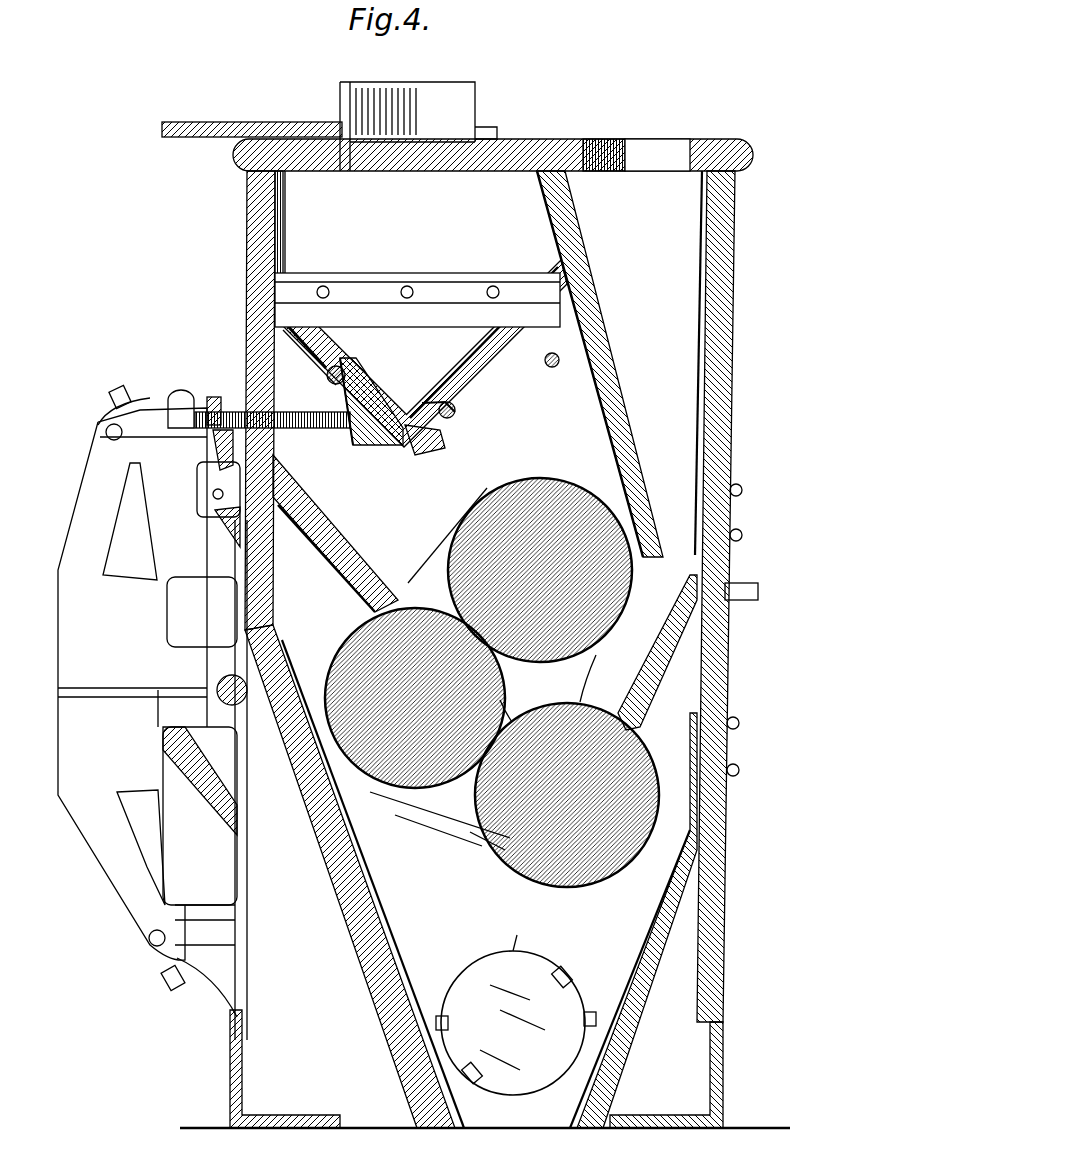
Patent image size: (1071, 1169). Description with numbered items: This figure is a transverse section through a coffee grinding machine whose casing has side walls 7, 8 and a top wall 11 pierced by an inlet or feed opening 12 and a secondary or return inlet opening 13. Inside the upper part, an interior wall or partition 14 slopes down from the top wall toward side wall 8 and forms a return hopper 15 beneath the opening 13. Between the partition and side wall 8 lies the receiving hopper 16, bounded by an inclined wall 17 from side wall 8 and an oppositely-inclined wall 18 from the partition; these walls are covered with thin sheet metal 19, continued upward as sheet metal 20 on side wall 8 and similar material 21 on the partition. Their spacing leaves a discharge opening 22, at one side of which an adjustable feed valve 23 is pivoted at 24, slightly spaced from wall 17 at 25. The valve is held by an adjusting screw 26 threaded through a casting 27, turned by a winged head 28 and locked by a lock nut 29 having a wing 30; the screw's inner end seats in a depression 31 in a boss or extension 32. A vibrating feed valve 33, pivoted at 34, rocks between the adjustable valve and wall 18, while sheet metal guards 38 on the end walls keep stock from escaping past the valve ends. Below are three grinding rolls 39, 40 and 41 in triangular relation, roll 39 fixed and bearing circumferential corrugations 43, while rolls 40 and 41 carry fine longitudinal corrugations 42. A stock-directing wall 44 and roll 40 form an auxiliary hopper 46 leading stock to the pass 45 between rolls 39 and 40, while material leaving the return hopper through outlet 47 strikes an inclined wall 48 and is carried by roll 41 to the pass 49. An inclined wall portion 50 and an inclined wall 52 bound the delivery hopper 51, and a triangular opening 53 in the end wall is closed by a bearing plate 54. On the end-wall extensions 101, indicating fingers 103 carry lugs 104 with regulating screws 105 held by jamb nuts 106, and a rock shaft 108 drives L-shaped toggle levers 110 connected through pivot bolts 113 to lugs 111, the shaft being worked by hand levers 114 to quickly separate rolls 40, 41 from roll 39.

The side wall 7 is at (255, 592).
The side wall 8 is at (720, 448).
The top wall 11 is at (515, 158).
The inlet or feed opening 12 is at (450, 165).
The secondary or return inlet opening 13 is at (645, 160).
The interior wall or partition 14 is at (585, 255).
The return hopper 15 is at (670, 300).
The receiving hopper 16 is at (300, 262).
The inclined wall 17 is at (258, 325).
The oppositely-inclined wall 18 is at (490, 372).
The thin sheet metal 19 is at (320, 327).
The thin sheet metal 20 is at (284, 229).
The similar material 21 is at (558, 229).
The discharge opening 22 is at (460, 405).
The adjustable feed valve 23 is at (360, 392).
The pivot 24 is at (328, 378).
The space 25 is at (328, 352).
The adjusting screw 26 is at (305, 428).
The casting 27 is at (213, 396).
The winged head 28 is at (215, 452).
The lock nut 29 is at (181, 390).
The wing 30 is at (205, 480).
The depression 31 is at (350, 440).
The boss or extension 32 is at (380, 430).
The vibrating feed valve 33 is at (425, 440).
The pivot 34 is at (452, 418).
The sheet metal guards 38 is at (552, 368).
The grinding roll 39 is at (355, 650).
The grinding roll 40 is at (500, 508).
The grinding roll 41 is at (600, 880).
The gap 42 is at (597, 660).
The circumferential corrugations 43 is at (380, 793).
The stock-directing wall 44 is at (322, 560).
The pass 45 is at (455, 565).
The auxiliary hopper 46 is at (350, 598).
The outlet 47 is at (705, 520).
The inclined wall 48 is at (665, 665).
The pass 49 is at (512, 718).
The inclined wall portion 50 is at (365, 913).
The delivery hopper 51 is at (410, 1000).
The inclined wall 52 is at (625, 1048).
The triangular opening 53 is at (478, 842).
The bearing plates or members 54 is at (440, 825).
The extensions 101 is at (78, 548).
The indicating fingers 103 is at (145, 530).
The lug 104 is at (130, 397).
The regulating screw 105 is at (112, 394).
The jamb nuts 106 is at (100, 420).
The rock shaft 108 is at (228, 675).
The L-shaped toggle lever 110 is at (225, 585).
The lugs 111 is at (210, 520).
The pivot bolts 113 is at (270, 494).
The hand levers 114 is at (215, 770).